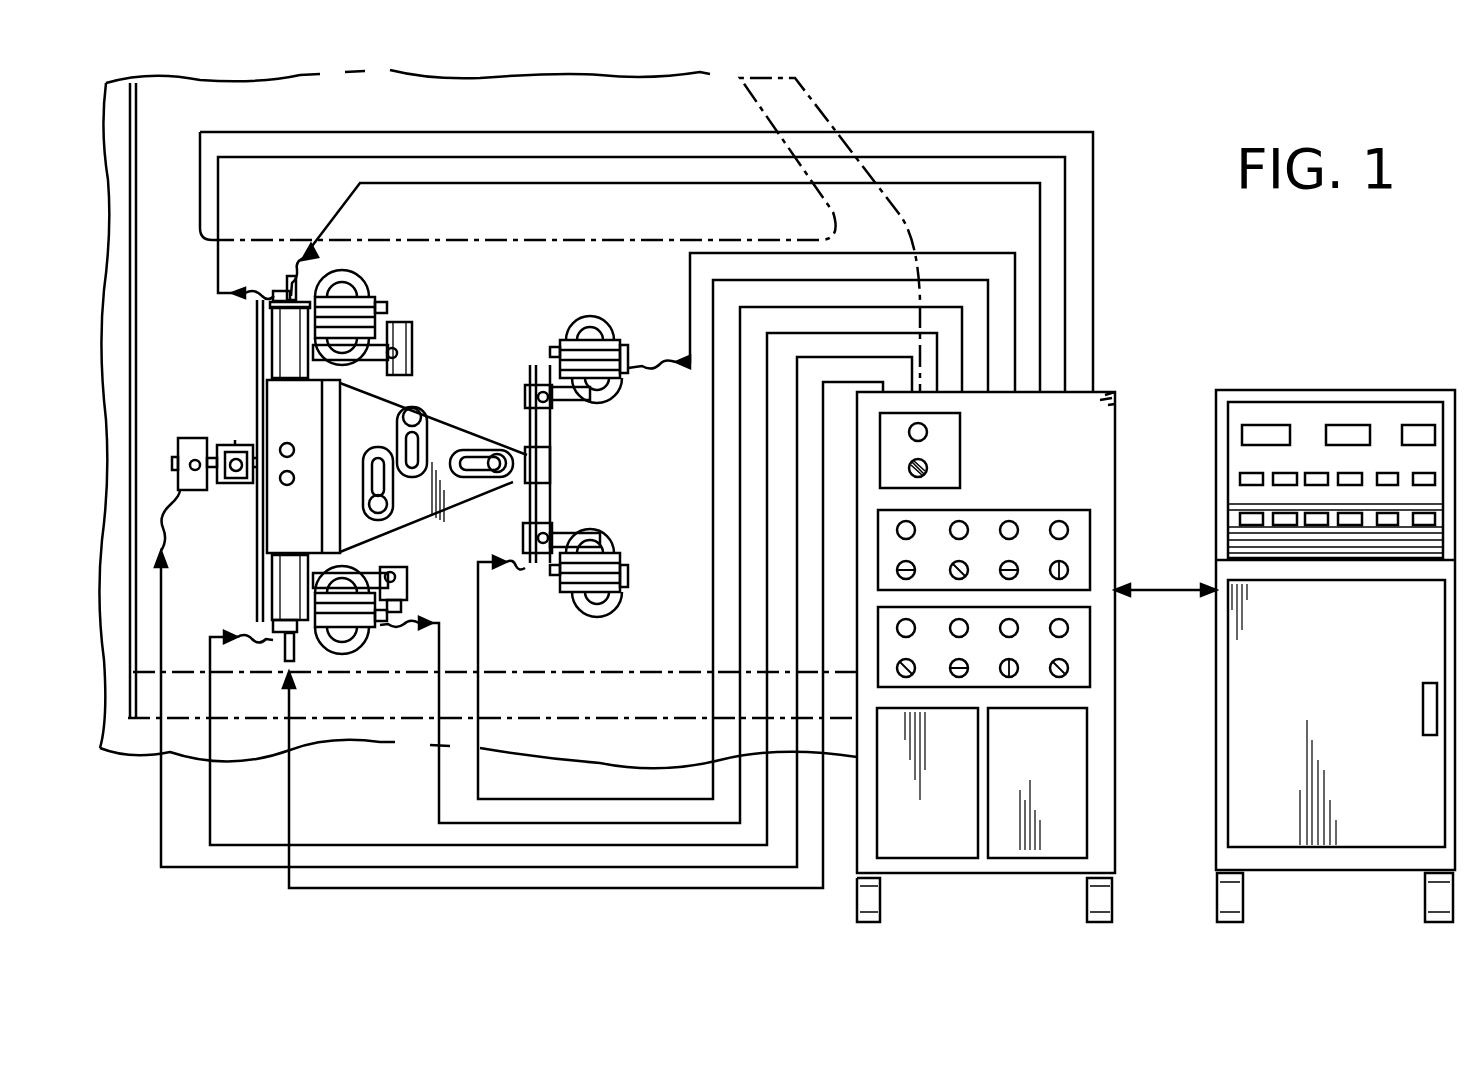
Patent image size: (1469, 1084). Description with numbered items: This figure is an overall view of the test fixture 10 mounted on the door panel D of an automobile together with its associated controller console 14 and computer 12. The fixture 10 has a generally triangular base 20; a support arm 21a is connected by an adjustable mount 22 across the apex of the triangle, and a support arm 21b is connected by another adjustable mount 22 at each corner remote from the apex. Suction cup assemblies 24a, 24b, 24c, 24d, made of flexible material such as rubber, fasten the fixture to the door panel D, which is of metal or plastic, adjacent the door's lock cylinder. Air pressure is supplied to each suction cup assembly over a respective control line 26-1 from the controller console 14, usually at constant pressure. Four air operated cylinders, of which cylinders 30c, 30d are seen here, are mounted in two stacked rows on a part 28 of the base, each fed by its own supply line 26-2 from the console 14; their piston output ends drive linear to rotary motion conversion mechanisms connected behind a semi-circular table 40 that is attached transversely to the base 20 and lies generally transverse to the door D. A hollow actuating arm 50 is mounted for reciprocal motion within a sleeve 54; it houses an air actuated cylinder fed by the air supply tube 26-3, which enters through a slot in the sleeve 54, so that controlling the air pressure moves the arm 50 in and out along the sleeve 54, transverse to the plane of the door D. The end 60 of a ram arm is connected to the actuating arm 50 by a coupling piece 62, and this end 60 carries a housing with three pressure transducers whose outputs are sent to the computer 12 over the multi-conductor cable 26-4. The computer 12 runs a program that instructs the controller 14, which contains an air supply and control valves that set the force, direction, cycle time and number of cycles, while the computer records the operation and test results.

The test fixture 10 is at (404, 315).
The computer 12 is at (1347, 402).
The controller console 14 is at (1115, 392).
The triangular base 20 is at (453, 435).
The support arm 21a is at (550, 432).
The support arm 21b is at (412, 367).
The adjustable mount 22 is at (376, 447).
The suction cup assembly 24a is at (597, 312).
The suction cup assembly 24b is at (597, 630).
The suction cup assembly 24c is at (342, 662).
The suction cup assembly 24d is at (346, 290).
The control line 26-1 is at (920, 357).
The supply line 26-2 is at (1065, 284).
The air supply tube 26-3 is at (568, 132).
The multi-conductor cable 26-4 is at (192, 867).
The part of the base 28 is at (305, 416).
The air operated cylinder 30c is at (287, 328).
The air operated cylinder 30d is at (285, 600).
The semi-circular table 40 is at (258, 579).
The actuating arm 50 is at (232, 492).
The sleeve 54 is at (236, 446).
The end of ram arm 60 is at (188, 438).
The coupling piece 62 is at (232, 485).
The door panel D is at (828, 112).